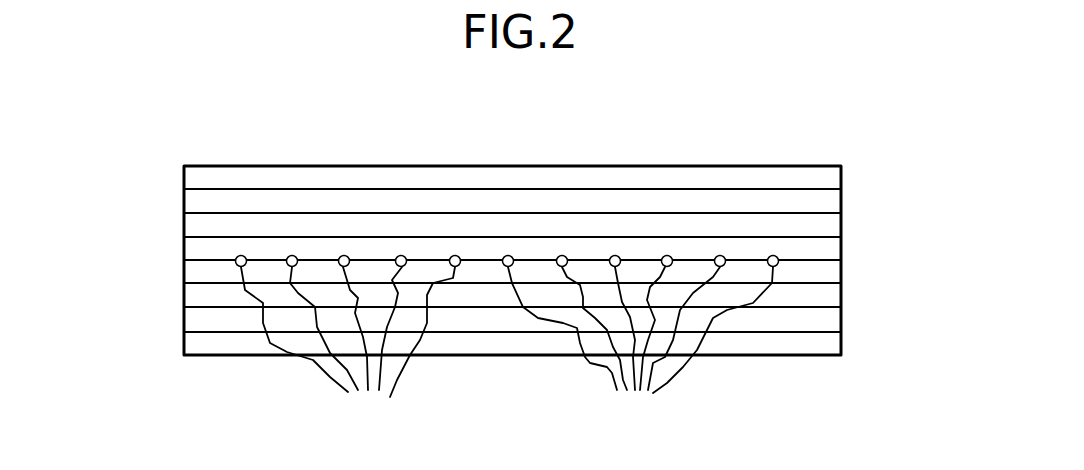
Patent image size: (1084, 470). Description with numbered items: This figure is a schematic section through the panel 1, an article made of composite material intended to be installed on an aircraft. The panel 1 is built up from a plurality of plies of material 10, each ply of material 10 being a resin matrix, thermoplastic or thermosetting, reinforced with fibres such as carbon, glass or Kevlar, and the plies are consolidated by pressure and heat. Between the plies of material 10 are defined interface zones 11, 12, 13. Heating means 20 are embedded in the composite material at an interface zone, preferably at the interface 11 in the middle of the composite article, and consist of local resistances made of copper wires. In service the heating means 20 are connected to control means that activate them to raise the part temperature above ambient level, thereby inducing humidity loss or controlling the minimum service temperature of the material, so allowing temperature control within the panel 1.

The panel 1 is at (716, 146).
The ply of material 10 is at (510, 260).
The interface zone 11 is at (565, 261).
The interface zone 12 is at (510, 259).
The interface zone 13 is at (510, 261).
The heating means 20 is at (507, 345).